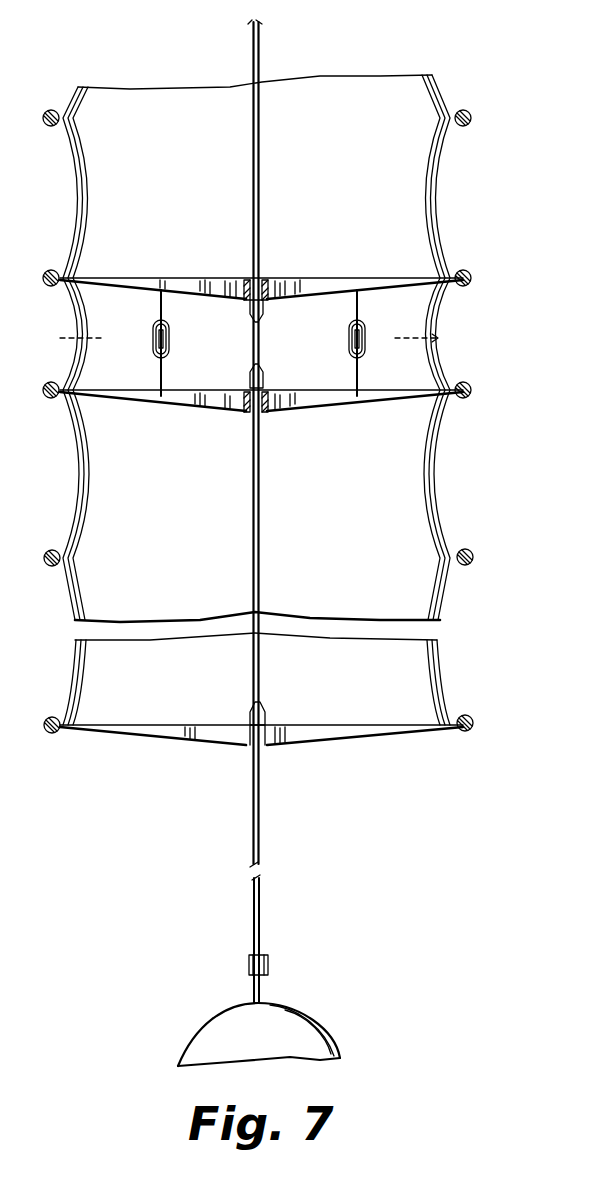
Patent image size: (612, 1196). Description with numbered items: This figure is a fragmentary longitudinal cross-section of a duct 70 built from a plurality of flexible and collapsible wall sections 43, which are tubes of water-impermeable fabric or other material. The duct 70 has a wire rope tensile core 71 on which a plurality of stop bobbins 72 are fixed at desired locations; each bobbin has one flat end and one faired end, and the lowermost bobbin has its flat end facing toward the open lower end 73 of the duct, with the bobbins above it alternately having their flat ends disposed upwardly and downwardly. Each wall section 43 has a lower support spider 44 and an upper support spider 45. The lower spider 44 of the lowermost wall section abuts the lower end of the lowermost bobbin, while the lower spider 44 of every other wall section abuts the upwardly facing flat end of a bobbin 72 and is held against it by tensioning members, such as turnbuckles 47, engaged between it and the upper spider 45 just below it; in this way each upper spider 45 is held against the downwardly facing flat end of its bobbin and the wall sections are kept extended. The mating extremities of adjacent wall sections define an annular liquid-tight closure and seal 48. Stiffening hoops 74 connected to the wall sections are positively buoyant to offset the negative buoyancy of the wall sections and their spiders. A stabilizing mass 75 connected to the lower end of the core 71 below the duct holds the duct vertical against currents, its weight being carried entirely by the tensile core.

The wall section 43 is at (452, 190).
The lower support spider 44 is at (283, 292).
The upper support spider 45 is at (291, 402).
The turnbuckle 47 is at (171, 338).
The annular liquid-tight closure and seal 48 is at (430, 338).
The duct 70 is at (538, 407).
The wire rope tensile core 71 is at (262, 510).
The stop bobbin 72 is at (265, 304).
The open lower end 73 is at (415, 732).
The stiffening hoop 74 is at (470, 388).
The stabilizing mass 75 is at (312, 1020).